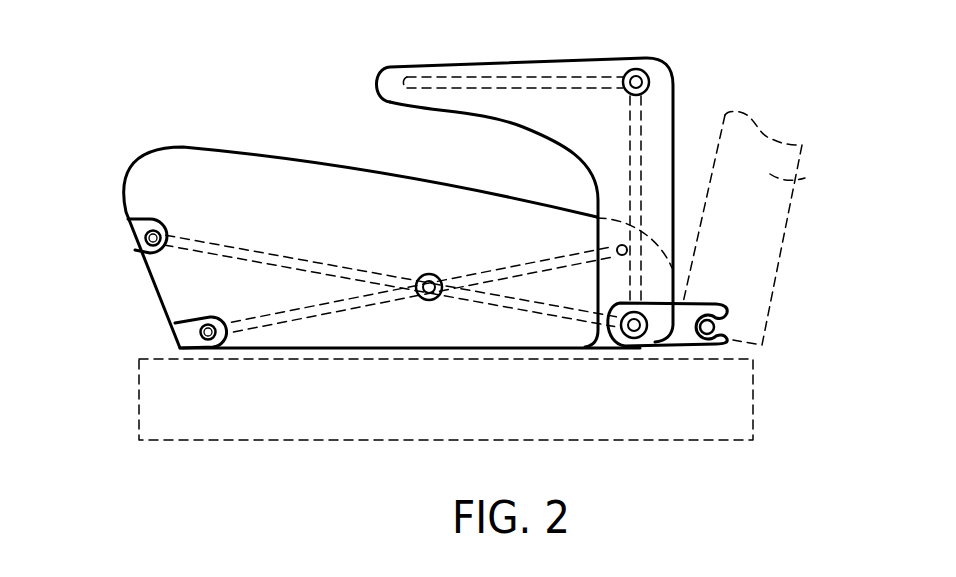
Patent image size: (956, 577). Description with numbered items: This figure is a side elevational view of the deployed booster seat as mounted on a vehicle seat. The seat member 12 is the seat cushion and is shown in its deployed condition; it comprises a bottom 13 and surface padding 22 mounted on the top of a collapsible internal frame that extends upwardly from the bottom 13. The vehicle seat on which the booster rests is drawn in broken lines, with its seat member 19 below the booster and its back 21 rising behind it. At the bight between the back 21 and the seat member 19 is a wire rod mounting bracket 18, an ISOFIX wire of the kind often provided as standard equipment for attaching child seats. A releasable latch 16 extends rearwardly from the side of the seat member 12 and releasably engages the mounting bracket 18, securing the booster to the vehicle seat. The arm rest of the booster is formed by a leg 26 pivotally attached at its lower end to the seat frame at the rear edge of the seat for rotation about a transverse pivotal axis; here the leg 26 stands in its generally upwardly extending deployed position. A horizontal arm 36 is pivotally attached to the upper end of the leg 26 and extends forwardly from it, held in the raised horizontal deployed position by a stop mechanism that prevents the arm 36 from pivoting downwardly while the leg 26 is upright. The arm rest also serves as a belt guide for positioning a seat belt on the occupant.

The seat member 12 is at (107, 288).
The bottom 13 is at (230, 348).
The releasable latch 16 is at (713, 307).
The wire rod mounting bracket 18 is at (727, 327).
The seat member of automobile seat 19 is at (649, 420).
The back of automobile seat 21 is at (772, 175).
The surface padding 22 is at (178, 152).
The leg 26 is at (642, 138).
The horizontal arm 36 is at (483, 77).